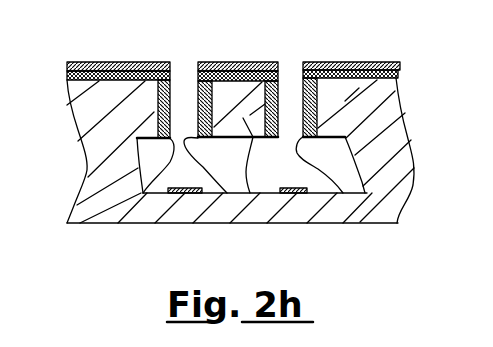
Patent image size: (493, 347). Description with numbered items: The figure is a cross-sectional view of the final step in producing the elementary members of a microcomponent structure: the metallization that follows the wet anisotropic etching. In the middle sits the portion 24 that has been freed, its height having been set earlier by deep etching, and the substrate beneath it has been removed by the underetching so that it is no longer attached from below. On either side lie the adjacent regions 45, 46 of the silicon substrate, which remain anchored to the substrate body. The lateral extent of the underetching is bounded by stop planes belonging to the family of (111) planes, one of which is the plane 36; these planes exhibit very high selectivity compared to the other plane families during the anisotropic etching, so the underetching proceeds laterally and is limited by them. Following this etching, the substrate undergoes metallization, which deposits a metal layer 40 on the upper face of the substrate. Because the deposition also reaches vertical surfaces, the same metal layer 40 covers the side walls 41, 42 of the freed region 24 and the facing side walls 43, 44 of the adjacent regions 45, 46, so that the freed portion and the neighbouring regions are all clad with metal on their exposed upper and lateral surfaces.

The portion to be freed 24 is at (262, 222).
The (111) plane limiting the underetching 36 is at (10, 215).
The metal layer 40 is at (172, 72).
The side wall of the freed region 41 is at (279, 72).
The side wall of the freed region 42 is at (228, 195).
The facing side wall of an adjacent region 43 is at (139, 193).
The facing side wall of an adjacent region 44 is at (343, 193).
The adjacent region 45 is at (354, 104).
The adjacent region 46 is at (122, 120).
The (111) crystallographic plane family 111 is at (25, 138).